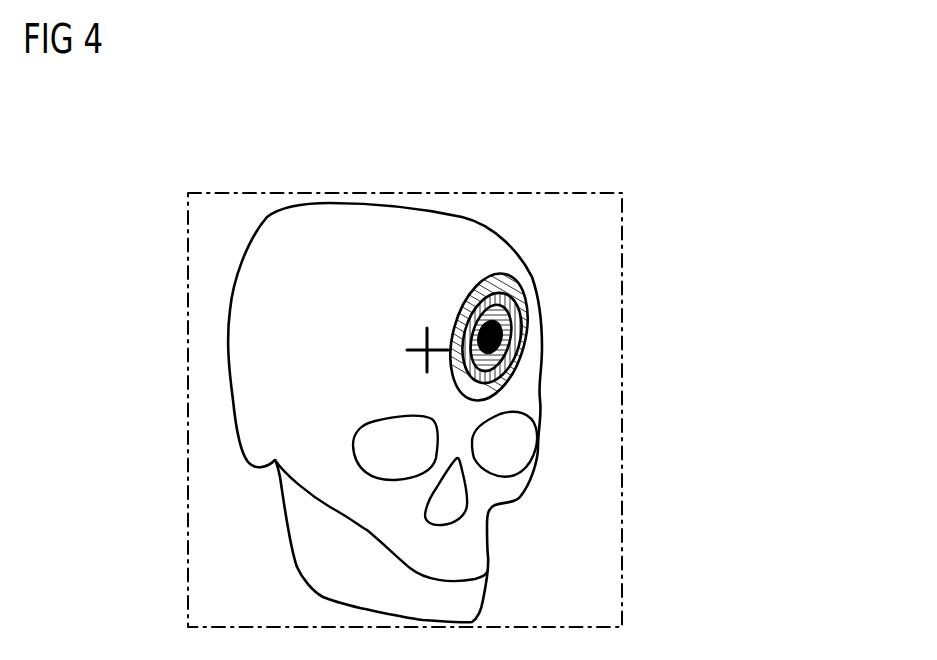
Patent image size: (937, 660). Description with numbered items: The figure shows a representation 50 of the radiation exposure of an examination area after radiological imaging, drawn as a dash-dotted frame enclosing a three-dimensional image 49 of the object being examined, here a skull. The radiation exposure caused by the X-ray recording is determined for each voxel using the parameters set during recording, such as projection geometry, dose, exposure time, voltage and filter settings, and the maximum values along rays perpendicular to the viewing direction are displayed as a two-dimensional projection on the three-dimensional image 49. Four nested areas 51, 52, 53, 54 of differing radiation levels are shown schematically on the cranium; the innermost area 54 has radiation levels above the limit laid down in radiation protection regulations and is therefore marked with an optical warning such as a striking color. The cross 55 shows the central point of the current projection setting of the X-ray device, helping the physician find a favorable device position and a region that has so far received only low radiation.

The 3D image 49 is at (290, 293).
The representation of the radiation exposure 50 is at (215, 132).
The area of radiation level 51 is at (518, 335).
The area of radiation level 52 is at (472, 292).
The area of radiation level 53 is at (494, 300).
The area of radiation level 54 is at (490, 322).
The cross 55 is at (413, 347).